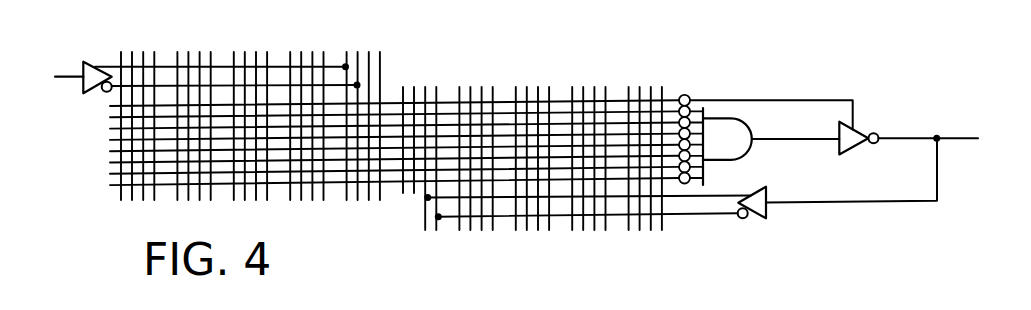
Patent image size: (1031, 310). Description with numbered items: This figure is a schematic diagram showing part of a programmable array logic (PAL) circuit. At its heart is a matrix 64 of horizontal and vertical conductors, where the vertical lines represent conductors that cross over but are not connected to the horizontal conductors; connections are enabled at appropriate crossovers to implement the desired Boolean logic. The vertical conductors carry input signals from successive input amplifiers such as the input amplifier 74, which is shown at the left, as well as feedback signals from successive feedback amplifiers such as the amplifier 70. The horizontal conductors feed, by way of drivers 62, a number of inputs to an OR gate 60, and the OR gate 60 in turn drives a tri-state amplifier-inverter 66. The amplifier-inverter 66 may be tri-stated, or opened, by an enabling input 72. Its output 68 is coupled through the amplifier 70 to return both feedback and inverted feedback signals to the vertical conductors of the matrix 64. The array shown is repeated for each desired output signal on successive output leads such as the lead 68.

The OR gate 60 is at (738, 122).
The drivers 62 is at (683, 184).
The matrix 64 is at (487, 70).
The tri-state amplifier-inverter 66 is at (847, 154).
The output 68 is at (955, 137).
The amplifier 70 is at (770, 190).
The enabling input 72 is at (853, 118).
The input amplifier 74 is at (82, 63).